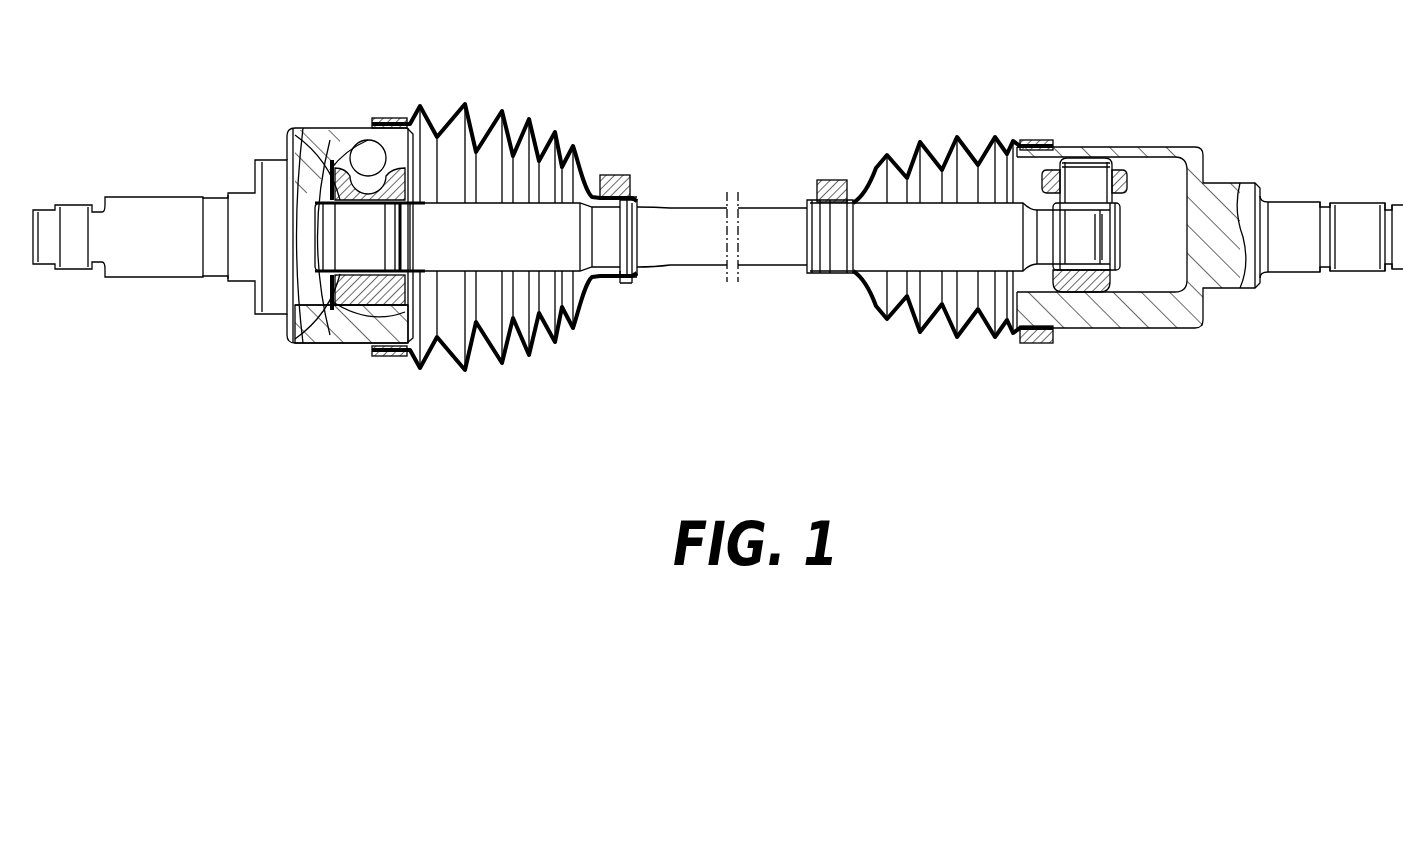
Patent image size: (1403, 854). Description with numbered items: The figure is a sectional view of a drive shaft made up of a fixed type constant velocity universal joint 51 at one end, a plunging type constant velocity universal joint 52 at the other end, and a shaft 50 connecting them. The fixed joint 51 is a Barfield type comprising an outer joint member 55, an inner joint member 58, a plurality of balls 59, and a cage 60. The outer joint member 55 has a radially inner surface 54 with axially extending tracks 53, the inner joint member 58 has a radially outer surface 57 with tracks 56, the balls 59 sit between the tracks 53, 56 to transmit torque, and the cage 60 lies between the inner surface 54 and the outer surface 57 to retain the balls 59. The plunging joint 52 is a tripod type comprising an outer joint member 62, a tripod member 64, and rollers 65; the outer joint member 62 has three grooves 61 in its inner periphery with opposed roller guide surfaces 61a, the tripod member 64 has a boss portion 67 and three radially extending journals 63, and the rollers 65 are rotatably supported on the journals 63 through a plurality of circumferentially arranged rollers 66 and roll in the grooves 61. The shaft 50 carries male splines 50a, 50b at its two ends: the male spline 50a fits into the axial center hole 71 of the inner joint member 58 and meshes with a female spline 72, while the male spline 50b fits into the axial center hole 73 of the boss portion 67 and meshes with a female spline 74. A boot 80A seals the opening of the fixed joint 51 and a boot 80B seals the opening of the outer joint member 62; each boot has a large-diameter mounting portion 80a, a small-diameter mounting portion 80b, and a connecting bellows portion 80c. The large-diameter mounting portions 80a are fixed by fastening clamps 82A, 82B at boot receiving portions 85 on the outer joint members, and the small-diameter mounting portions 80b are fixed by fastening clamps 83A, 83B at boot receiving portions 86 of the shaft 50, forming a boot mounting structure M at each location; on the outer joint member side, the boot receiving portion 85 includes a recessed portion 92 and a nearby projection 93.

The shaft 50 is at (703, 270).
The male spline 50a is at (256, 306).
The male spline 50b is at (1199, 301).
The fixed type constant velocity universal joint 51 is at (338, 76).
The plunging type constant velocity universal joint 52 is at (1162, 118).
The tracks 53 is at (331, 128).
The radially inner surface 54 is at (332, 332).
The outer joint member 55 is at (309, 127).
The tracks 56 is at (406, 181).
The radially outer surface 57 is at (362, 316).
The inner joint member 58 is at (406, 290).
The balls 59 is at (369, 142).
The cage 60 is at (441, 332).
The grooves 61 is at (1160, 158).
The roller guide surfaces 61a is at (1129, 162).
The outer joint member 62 is at (1157, 332).
The journals 63 is at (1090, 176).
The tripod member 64 is at (1110, 291).
The rollers 65 is at (1128, 184).
The rollers 66 is at (1068, 180).
The boss portion 67 is at (1080, 292).
The axial center hole 71 is at (296, 192).
The female spline 72 is at (318, 272).
The axial center hole 73 is at (1097, 284).
The female spline 74 is at (1095, 218).
The boot 80A is at (506, 103).
The boot 80B is at (921, 131).
The large-diameter mounting portion 80a is at (386, 357).
The small-diameter mounting portion 80b is at (610, 174).
The bellows portion 80c is at (515, 357).
The fastening clamp 82A is at (386, 117).
The fastening clamp 82B is at (1040, 345).
The fastening clamp 83A is at (622, 279).
The fastening clamp 83B is at (823, 178).
The boot receiving portion 85 is at (395, 358).
The boot receiving portion 86 is at (640, 205).
The recessed portion 92 is at (636, 264).
The projection 93 is at (620, 255).
The boot mounting structure M is at (398, 121).